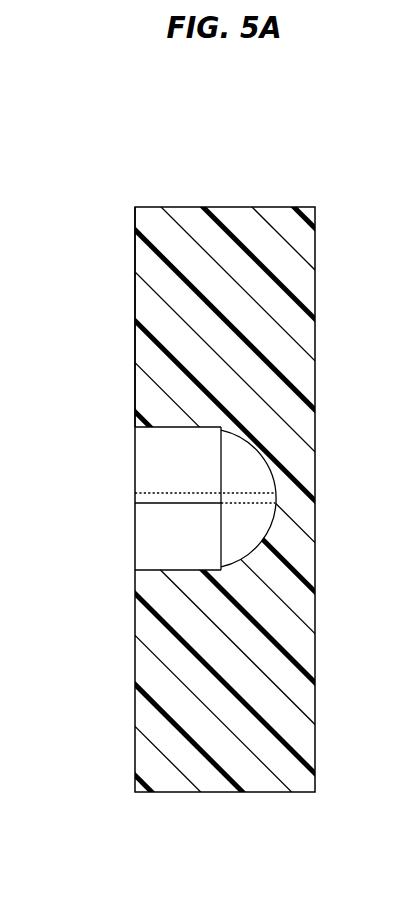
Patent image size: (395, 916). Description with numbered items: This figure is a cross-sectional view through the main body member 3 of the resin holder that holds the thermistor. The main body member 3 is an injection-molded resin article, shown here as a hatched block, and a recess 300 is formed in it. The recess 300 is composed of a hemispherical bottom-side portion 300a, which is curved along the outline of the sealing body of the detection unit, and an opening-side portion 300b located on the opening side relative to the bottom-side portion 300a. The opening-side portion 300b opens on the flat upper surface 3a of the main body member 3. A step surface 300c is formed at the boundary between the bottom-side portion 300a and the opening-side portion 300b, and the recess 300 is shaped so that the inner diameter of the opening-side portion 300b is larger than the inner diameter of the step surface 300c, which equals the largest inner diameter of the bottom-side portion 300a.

The main body member 3 is at (220, 207).
The flat upper surface 3a is at (135, 275).
The recess 300 is at (144, 492).
The bottom-side portion 300a is at (238, 475).
The opening-side portion 300b is at (145, 440).
The step surface 300c is at (220, 570).